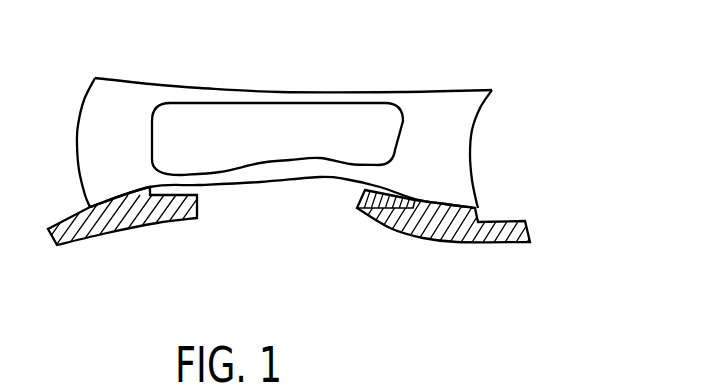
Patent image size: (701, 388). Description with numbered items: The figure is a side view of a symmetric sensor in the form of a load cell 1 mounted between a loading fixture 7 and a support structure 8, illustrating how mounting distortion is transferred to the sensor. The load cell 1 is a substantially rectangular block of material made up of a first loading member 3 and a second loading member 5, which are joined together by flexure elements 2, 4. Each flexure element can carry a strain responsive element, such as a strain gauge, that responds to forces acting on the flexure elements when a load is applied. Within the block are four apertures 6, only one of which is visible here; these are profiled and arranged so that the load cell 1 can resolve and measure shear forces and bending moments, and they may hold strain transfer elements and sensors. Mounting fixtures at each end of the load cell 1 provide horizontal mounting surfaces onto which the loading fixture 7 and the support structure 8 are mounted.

The load cell 1 is at (322, 137).
The flexure element 2 is at (323, 97).
The first loading member 3 is at (450, 97).
The flexure element 4 is at (330, 167).
The second loading member 5 is at (93, 157).
The aperture 6 is at (267, 155).
The loading fixture 7 is at (503, 235).
The support structure 8 is at (115, 217).